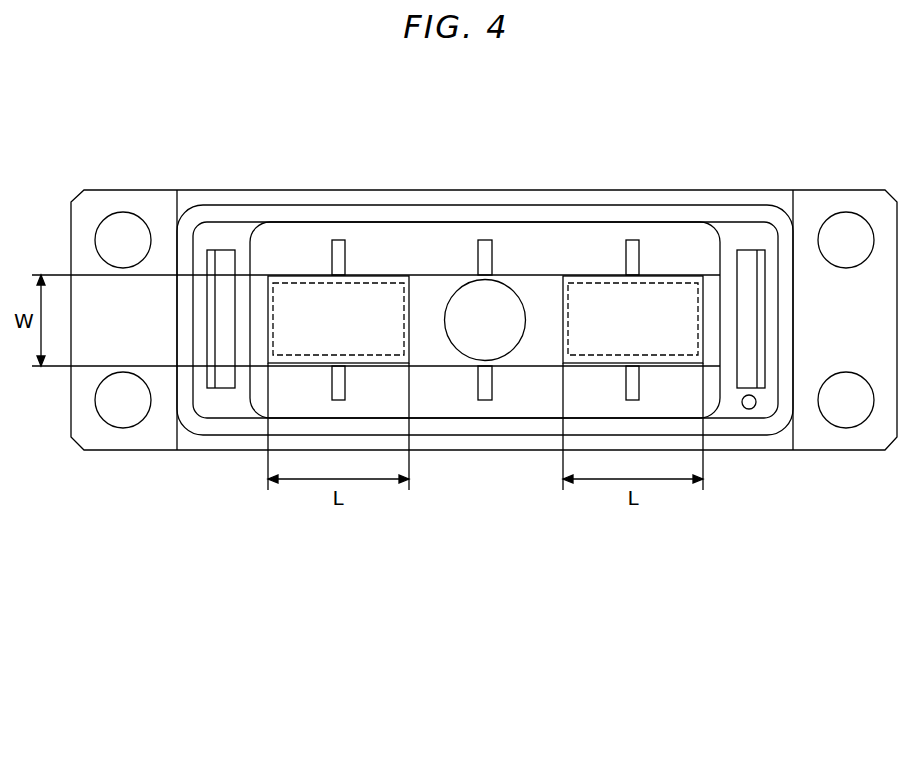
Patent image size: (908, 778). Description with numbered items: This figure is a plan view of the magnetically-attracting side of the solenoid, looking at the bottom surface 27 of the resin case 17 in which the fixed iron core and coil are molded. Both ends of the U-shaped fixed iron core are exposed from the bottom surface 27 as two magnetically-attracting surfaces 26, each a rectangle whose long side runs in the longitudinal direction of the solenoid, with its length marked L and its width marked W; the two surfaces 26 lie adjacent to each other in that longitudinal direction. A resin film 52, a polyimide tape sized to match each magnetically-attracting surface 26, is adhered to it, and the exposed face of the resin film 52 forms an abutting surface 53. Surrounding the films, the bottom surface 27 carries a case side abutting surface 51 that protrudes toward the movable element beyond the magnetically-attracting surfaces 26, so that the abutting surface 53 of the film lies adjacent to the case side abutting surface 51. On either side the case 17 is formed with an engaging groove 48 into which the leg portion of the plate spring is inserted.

The case 17 is at (843, 310).
The magnetically-attracting surface 26 is at (358, 300).
The bottom surface 27 is at (689, 245).
The engaging groove 48 is at (224, 263).
The case side abutting surface 51 is at (394, 243).
The resin film 52 is at (653, 302).
The abutting surface 53 is at (289, 302).